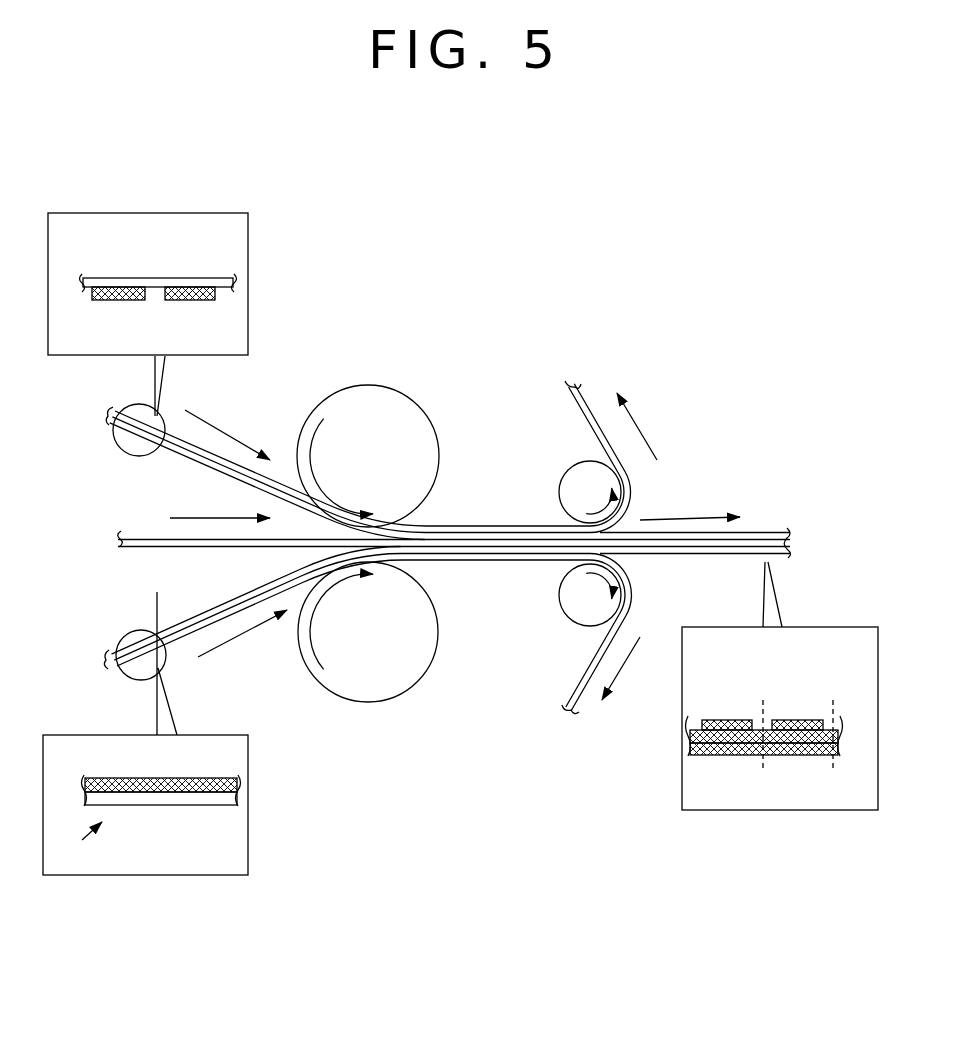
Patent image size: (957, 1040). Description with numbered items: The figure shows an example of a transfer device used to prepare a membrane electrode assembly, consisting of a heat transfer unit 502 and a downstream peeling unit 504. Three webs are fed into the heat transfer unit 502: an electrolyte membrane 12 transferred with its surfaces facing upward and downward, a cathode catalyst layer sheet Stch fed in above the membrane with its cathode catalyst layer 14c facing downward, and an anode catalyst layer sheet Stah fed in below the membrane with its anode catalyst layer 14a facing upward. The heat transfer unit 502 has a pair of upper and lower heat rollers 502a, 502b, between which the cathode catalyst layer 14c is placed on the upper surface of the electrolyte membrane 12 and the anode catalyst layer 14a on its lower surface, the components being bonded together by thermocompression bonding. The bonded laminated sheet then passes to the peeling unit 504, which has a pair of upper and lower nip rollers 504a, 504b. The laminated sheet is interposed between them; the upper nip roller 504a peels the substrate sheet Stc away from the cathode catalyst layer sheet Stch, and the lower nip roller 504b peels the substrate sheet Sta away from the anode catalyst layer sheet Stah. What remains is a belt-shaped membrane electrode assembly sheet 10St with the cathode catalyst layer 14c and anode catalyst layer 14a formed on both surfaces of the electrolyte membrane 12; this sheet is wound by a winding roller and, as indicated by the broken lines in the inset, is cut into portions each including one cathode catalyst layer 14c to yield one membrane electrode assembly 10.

The membrane electrode assembly 10 is at (750, 680).
The membrane electrode assembly sheet 10St is at (765, 528).
The electrolyte membrane 12 is at (131, 532).
The anode catalyst layer 14a is at (130, 654).
The cathode catalyst layer 14c is at (172, 301).
The heat transfer unit 502 is at (395, 507).
The heat roller 502a is at (458, 390).
The heat roller 502b is at (423, 677).
The peeling unit 504 is at (542, 459).
The nip roller 504a is at (560, 478).
The nip roller 504b is at (560, 615).
The substrate sheet Stc is at (160, 277).
The substrate sheet Sta is at (133, 670).
The cathode catalyst layer sheet Stch is at (150, 445).
The anode catalyst layer sheet Stah is at (145, 719).